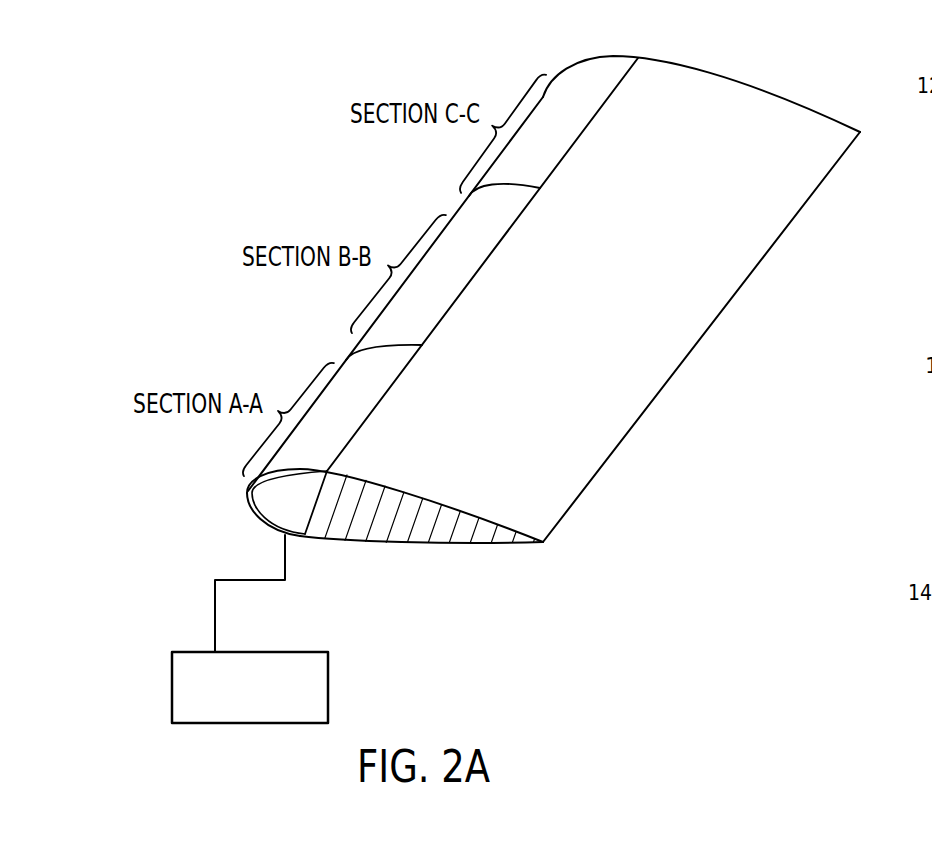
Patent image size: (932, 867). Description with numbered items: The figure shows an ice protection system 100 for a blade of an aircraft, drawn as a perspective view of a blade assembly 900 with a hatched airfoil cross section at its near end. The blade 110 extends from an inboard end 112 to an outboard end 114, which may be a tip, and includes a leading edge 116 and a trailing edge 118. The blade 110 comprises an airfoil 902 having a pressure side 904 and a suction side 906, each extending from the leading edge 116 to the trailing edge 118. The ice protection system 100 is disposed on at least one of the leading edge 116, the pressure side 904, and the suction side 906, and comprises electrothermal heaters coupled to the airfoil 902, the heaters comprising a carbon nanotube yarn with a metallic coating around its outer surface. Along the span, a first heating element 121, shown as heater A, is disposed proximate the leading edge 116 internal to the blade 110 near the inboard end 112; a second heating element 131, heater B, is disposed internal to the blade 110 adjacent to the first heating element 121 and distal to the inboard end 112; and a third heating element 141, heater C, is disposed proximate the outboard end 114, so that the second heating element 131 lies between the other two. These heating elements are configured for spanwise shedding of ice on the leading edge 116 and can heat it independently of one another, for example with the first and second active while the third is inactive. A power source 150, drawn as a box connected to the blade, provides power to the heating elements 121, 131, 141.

The blade assembly 900 is at (283, 172).
The ice protection system 100 is at (817, 372).
The blade 110 is at (638, 320).
The inboard end 112 is at (400, 527).
The outboard end 114 is at (763, 93).
The leading edge 116 is at (250, 497).
The trailing edge 118 is at (598, 480).
The first heating element 121 is at (402, 432).
The second heating element 131 is at (510, 286).
The third heating element 141 is at (618, 144).
The power source 150 is at (268, 713).
The airfoil 902 is at (720, 213).
The pressure side 904 is at (472, 538).
The suction side 906 is at (758, 160).